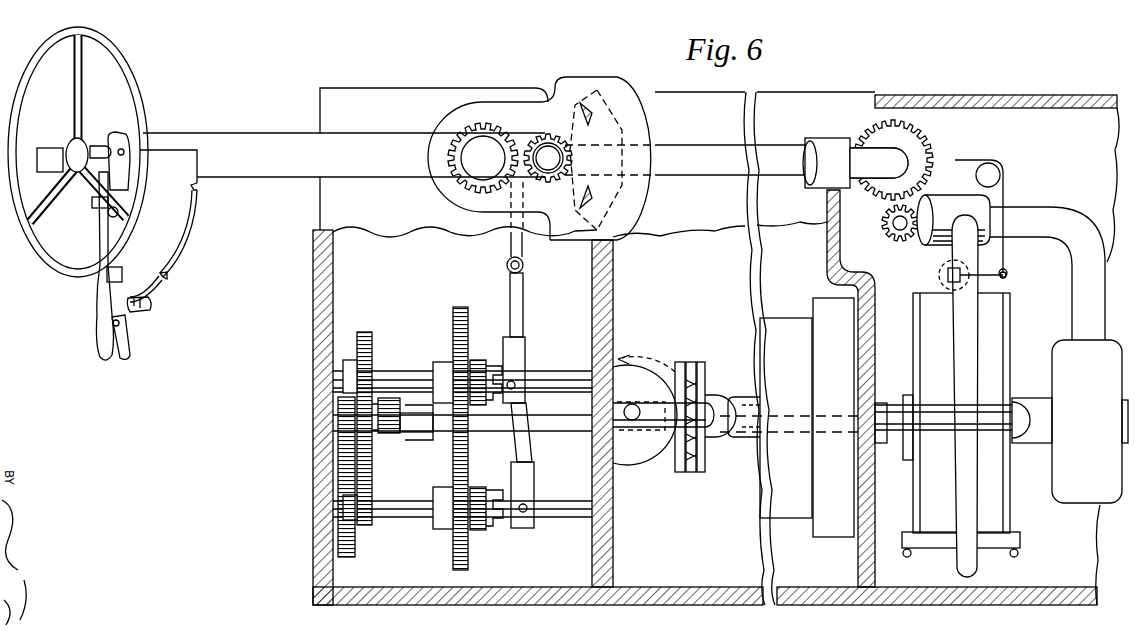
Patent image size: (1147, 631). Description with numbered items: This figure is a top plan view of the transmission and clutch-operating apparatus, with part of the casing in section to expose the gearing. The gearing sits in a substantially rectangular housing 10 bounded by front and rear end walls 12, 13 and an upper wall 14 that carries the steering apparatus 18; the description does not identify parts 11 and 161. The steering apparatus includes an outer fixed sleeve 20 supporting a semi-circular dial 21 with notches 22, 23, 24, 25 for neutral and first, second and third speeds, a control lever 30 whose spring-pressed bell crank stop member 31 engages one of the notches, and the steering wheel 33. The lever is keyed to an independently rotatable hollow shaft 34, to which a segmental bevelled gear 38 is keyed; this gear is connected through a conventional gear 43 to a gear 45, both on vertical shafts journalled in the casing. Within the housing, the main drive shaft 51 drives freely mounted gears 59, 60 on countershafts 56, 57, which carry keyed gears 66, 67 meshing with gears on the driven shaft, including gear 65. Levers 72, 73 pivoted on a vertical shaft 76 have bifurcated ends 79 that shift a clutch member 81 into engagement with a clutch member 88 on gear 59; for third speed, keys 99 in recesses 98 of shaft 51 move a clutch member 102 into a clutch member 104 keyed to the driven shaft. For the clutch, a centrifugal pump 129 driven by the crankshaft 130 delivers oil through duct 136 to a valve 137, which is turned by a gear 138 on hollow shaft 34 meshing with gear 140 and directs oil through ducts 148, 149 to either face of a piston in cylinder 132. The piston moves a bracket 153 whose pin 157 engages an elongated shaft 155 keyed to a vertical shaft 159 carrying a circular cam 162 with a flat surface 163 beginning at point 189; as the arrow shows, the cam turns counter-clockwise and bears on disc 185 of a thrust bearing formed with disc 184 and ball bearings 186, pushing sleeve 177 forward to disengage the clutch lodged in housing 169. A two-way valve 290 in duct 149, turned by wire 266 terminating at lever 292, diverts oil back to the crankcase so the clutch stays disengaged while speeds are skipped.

The housing 10 is at (310, 316).
The steering column housing 11 is at (393, 90).
The front end wall 12 is at (620, 275).
The rear end wall 13 is at (313, 352).
The upper wall 14 is at (437, 92).
The steering apparatus 18 is at (254, 128).
The outer fixed sleeve 20 is at (293, 180).
The semi-circular dial 21 is at (192, 247).
The notch 22 is at (82, 290).
The notch 23 is at (148, 303).
The notch 24 is at (165, 282).
The notch 25 is at (197, 185).
The control lever 30 is at (96, 325).
The bell crank stop member 31 is at (131, 352).
The steering wheel 33 is at (38, 250).
The sleeve or hollow shaft 34 is at (868, 140).
The segmental bevelled gear 38 is at (578, 90).
The gear 43 is at (532, 130).
The gear 45 is at (485, 120).
The main drive shaft 51 is at (580, 424).
The countershaft 56 is at (400, 371).
The countershaft 57 is at (410, 518).
The gear 59 is at (460, 307).
The gear 60 is at (453, 555).
The gear 65 is at (315, 422).
The gear 66 is at (366, 332).
The gear 67 is at (346, 557).
The lever 72 is at (525, 300).
The lever 73 is at (532, 450).
The vertical shaft 76 is at (524, 266).
The bifurcated end 79 is at (525, 364).
The clutch member 81 is at (494, 366).
The clutch member 88 is at (478, 358).
The longitudinal recesses 98 is at (428, 432).
The keys 99 is at (435, 442).
The clutch member 102 is at (398, 433).
The clutch member 104 is at (378, 433).
The centrifugal pump 129 is at (1131, 348).
The crankshaft 130 is at (1000, 445).
The cylinder 132 is at (1002, 333).
The duct 136 is at (1078, 215).
The valve 137 is at (942, 192).
The gear 138 is at (910, 140).
The gear 140 is at (893, 235).
The duct 148 is at (968, 568).
The duct 149 is at (940, 265).
The bracket 153 is at (908, 462).
The elongated shaft 155 is at (778, 414).
The pin 157 is at (895, 445).
The vertical pin or shaft 159 is at (637, 405).
The disk 161 is at (833, 538).
The circular cam 162 is at (642, 460).
The flat surface 163 is at (676, 473).
The housing 169 is at (794, 520).
The elongated sleeve 177 is at (745, 397).
The disc 184 is at (703, 370).
The disc 185 is at (680, 360).
The ball bearings 186 is at (692, 362).
The point on cam 189 is at (666, 455).
The wire 266 is at (1006, 190).
The two-way valve structure 290 is at (945, 280).
The lever 292 is at (1006, 276).